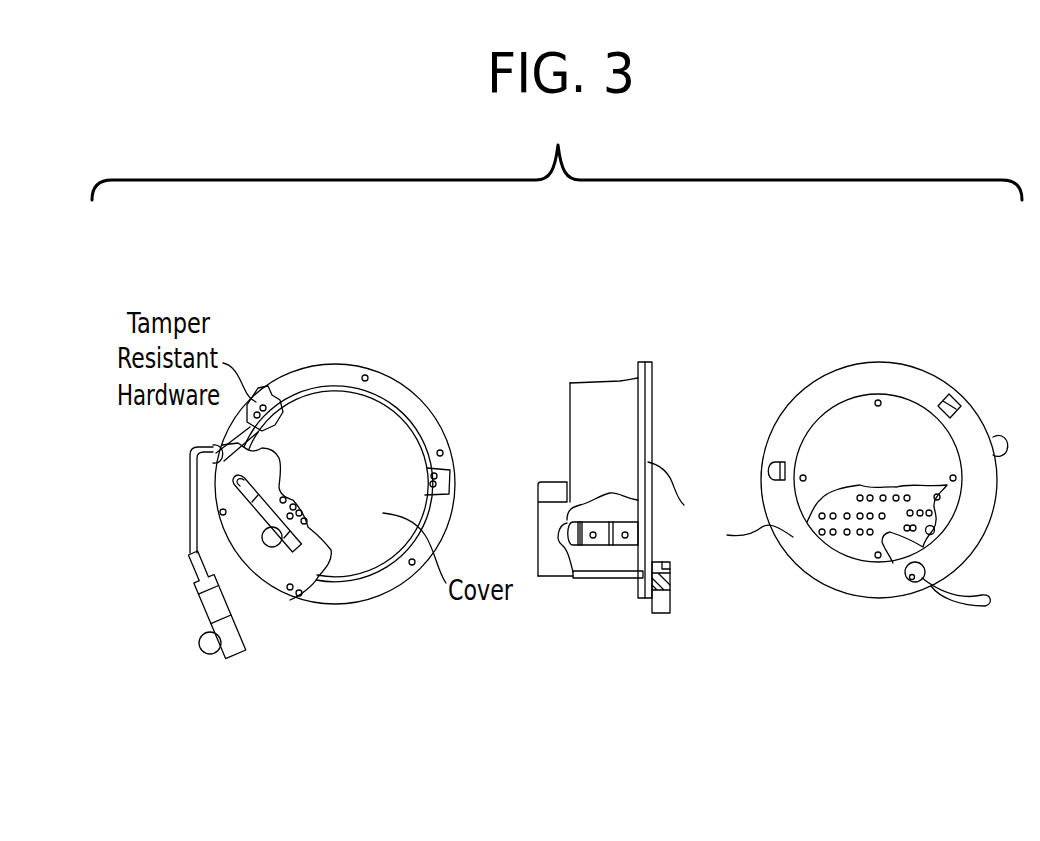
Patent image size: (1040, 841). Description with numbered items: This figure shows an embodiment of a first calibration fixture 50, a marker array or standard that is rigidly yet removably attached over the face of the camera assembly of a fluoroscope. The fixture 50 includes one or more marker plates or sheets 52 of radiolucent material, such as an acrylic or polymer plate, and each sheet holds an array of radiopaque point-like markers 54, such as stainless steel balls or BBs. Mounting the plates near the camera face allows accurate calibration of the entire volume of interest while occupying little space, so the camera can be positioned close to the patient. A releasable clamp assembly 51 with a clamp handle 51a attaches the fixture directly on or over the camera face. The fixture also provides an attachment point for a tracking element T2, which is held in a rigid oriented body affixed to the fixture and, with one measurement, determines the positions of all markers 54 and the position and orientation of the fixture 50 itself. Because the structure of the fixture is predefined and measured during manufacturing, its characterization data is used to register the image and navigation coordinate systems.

The first calibration fixture 50 is at (590, 378).
The releasable clamp assembly 51 is at (951, 402).
The clamp handle 51a is at (937, 592).
The marker plates or sheets 52 is at (645, 553).
The radiopaque point-like markers 54 is at (847, 533).
The tracking element T2 is at (296, 552).